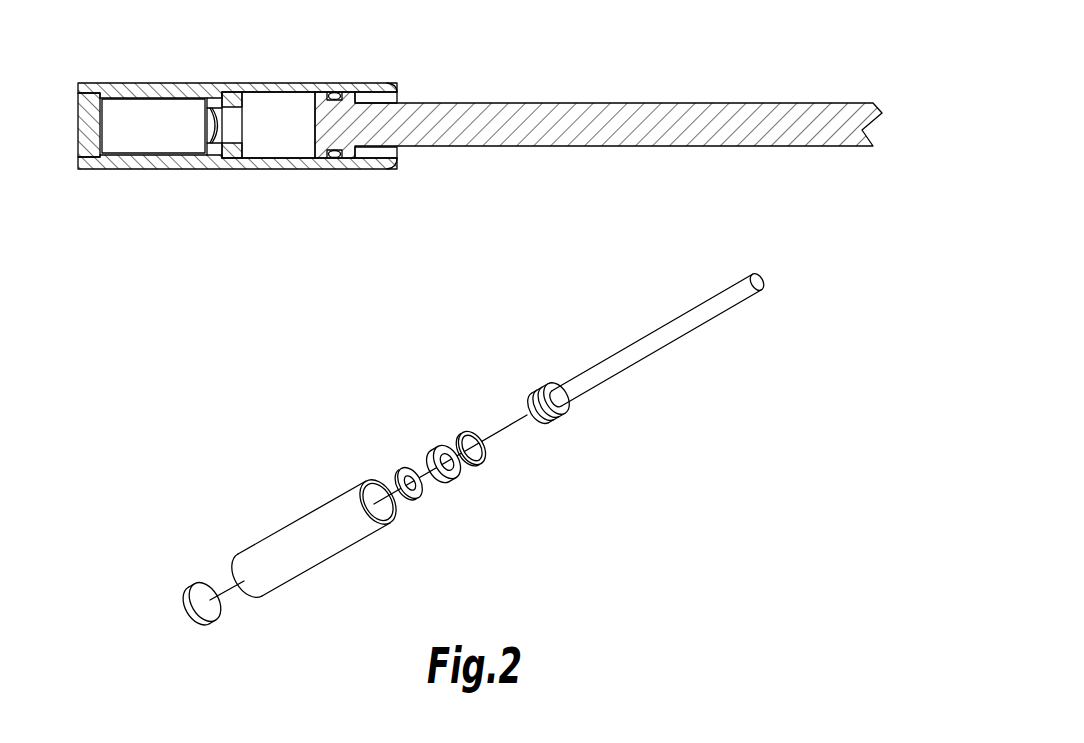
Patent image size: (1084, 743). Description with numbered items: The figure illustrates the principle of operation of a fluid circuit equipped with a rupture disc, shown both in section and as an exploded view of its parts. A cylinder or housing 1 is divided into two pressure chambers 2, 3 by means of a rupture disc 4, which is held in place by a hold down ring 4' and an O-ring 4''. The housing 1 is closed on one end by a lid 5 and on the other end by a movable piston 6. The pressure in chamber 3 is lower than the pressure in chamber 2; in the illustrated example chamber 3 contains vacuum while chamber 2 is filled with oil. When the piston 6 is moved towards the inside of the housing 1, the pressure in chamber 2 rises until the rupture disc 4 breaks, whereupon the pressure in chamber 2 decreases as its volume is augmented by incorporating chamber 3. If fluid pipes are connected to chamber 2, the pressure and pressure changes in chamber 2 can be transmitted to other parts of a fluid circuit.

The housing 1 is at (330, 83).
The pressure chamber 2 is at (262, 117).
The pressure chamber 3 is at (140, 118).
The rupture disc 4 is at (283, 296).
The hold down ring 4' is at (458, 501).
The O-ring 4'' is at (461, 414).
The lid 5 is at (78, 127).
The movable piston 6 is at (585, 146).